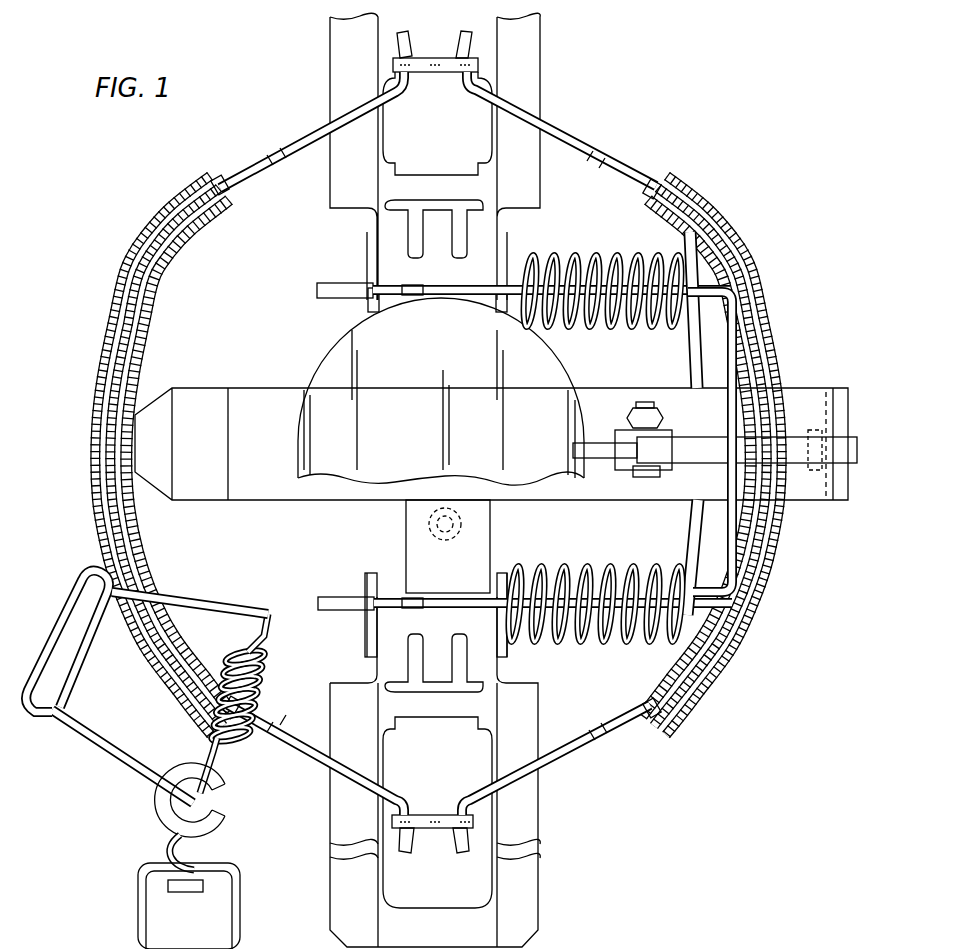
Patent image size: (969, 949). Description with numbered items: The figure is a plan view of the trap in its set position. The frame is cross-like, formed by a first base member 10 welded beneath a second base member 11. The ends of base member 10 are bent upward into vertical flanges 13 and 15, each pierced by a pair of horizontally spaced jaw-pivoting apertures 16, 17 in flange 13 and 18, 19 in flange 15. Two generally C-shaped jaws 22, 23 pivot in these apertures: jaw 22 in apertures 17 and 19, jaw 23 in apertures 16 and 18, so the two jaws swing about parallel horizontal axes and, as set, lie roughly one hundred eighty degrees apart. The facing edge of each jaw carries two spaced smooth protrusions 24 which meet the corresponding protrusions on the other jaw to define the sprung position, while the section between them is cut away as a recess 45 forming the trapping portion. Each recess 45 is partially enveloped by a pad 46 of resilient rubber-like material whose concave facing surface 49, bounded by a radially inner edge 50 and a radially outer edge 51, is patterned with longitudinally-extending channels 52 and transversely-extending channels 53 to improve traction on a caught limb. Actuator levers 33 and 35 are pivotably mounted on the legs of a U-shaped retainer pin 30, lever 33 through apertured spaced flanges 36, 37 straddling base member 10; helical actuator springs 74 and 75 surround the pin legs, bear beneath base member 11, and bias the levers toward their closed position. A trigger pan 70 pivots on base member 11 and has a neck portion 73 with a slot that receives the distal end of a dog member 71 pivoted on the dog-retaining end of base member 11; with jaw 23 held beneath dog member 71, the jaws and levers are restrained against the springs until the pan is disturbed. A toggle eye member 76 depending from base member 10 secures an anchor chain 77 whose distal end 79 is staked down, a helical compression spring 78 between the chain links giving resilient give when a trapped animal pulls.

The first base member 10 is at (447, 580).
The second base member 11 is at (246, 400).
The flange 13 is at (478, 64).
The flange 15 is at (473, 824).
The jaw-pivoting aperture 16 is at (483, 55).
The jaw-pivoting aperture 17 is at (414, 55).
The jaw-pivoting aperture 18 is at (469, 853).
The jaw-pivoting aperture 19 is at (418, 852).
The jaw 22 is at (308, 137).
The jaw 23 is at (572, 146).
The protrusion 24 is at (256, 167).
The retainer pin 30 is at (727, 362).
The actuator lever 33 is at (332, 46).
The actuator lever 35 is at (527, 915).
The flange 36 is at (368, 312).
The flange 37 is at (504, 291).
The recess 45 is at (213, 176).
The pad 46 is at (442, 455).
The facing surface 49 is at (156, 240).
The radially inner edge 50 is at (146, 352).
The radially outer edge 51 is at (100, 358).
The longitudinally-extending channel 52 is at (108, 405).
The transversely-extending channel 53 is at (93, 485).
The trigger pan 70 is at (375, 390).
The dog member 71 is at (797, 468).
The neck portion 73 is at (595, 440).
The actuator spring 74 is at (610, 262).
The actuator spring 75 is at (598, 648).
The toggle eye member 76 is at (462, 522).
The anchor chain 77 is at (133, 773).
The helical compression spring 78 is at (270, 682).
The distal end 79 is at (240, 898).